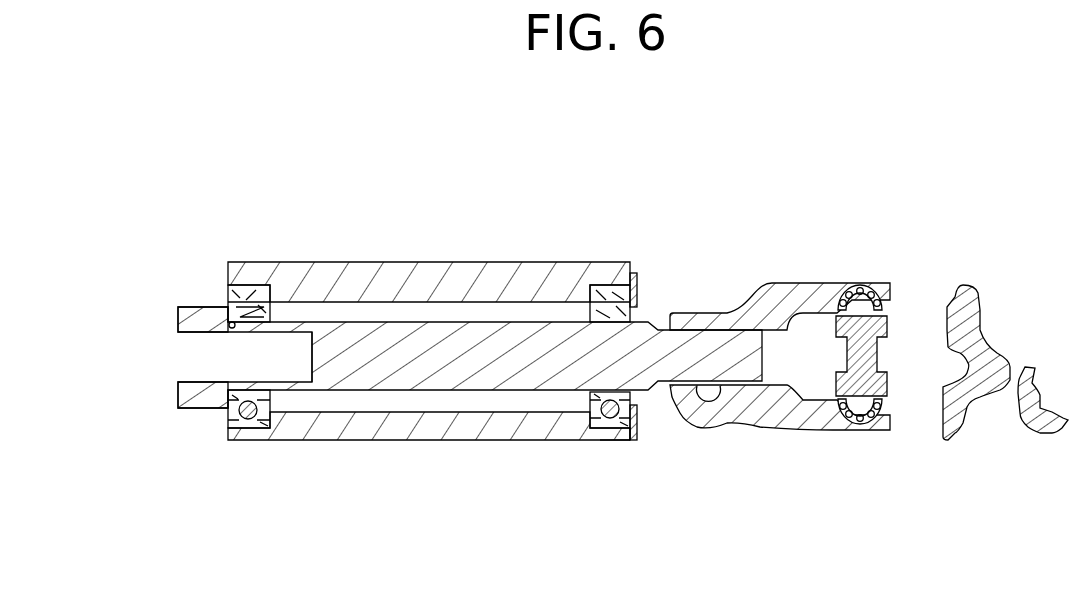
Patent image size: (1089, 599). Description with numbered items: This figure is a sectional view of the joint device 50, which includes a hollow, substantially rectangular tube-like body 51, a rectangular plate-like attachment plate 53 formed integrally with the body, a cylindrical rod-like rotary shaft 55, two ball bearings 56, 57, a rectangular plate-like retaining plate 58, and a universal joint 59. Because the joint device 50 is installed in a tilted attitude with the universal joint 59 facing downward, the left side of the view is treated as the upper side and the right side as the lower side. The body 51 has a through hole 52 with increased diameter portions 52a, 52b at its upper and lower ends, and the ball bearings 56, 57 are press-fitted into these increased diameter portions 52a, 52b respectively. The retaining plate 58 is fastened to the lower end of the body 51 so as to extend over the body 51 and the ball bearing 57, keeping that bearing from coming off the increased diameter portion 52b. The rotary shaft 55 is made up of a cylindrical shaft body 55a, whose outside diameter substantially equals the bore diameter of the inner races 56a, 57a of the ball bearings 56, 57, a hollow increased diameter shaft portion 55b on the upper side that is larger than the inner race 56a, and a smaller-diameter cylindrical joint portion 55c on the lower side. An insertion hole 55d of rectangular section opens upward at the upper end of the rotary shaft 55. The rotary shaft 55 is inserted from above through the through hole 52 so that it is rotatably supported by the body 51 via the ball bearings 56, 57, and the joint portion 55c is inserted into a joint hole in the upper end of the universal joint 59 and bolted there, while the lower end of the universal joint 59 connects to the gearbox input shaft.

The joint device 50 is at (638, 460).
The body 51 is at (457, 427).
The through hole 52 is at (393, 402).
The increased diameter portion 52a is at (228, 293).
The increased diameter portion 52b is at (614, 416).
The attachment plate 53 is at (632, 272).
The rotary shaft 55 is at (515, 367).
The shaft body 55a is at (332, 368).
The increased diameter shaft portion 55b is at (187, 395).
The joint portion 55c is at (725, 347).
The insertion hole 55d is at (200, 333).
The ball bearing 56 is at (228, 420).
The inner race 56a is at (240, 330).
The ball bearing 57 is at (640, 292).
The inner race 57a is at (640, 396).
The retaining plate 58 is at (637, 425).
The universal joint 59 is at (800, 413).